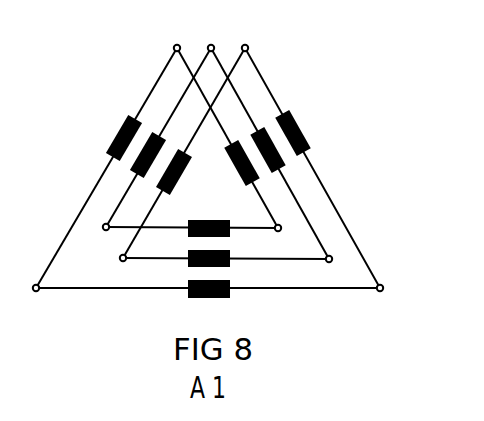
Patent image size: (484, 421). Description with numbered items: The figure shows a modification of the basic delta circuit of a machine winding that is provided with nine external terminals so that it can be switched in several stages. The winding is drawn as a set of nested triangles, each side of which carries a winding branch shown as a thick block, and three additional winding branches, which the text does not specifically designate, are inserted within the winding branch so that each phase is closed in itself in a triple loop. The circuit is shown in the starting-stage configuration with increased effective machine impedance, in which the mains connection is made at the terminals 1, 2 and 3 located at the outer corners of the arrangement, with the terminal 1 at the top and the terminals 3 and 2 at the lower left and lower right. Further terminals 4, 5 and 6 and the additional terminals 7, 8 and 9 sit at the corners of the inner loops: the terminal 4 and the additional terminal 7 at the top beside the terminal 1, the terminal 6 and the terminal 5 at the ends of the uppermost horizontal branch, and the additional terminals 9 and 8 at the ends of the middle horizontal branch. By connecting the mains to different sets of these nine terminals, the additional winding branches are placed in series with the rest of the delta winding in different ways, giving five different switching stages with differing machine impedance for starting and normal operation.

The terminal 1 is at (245, 45).
The terminal 2 is at (384, 289).
The terminal 3 is at (33, 288).
The terminal 4 is at (177, 45).
The terminal 5 is at (281, 231).
The terminal 6 is at (103, 229).
The additional terminal 7 is at (211, 45).
The additional terminal 8 is at (332, 262).
The additional terminal 9 is at (120, 260).